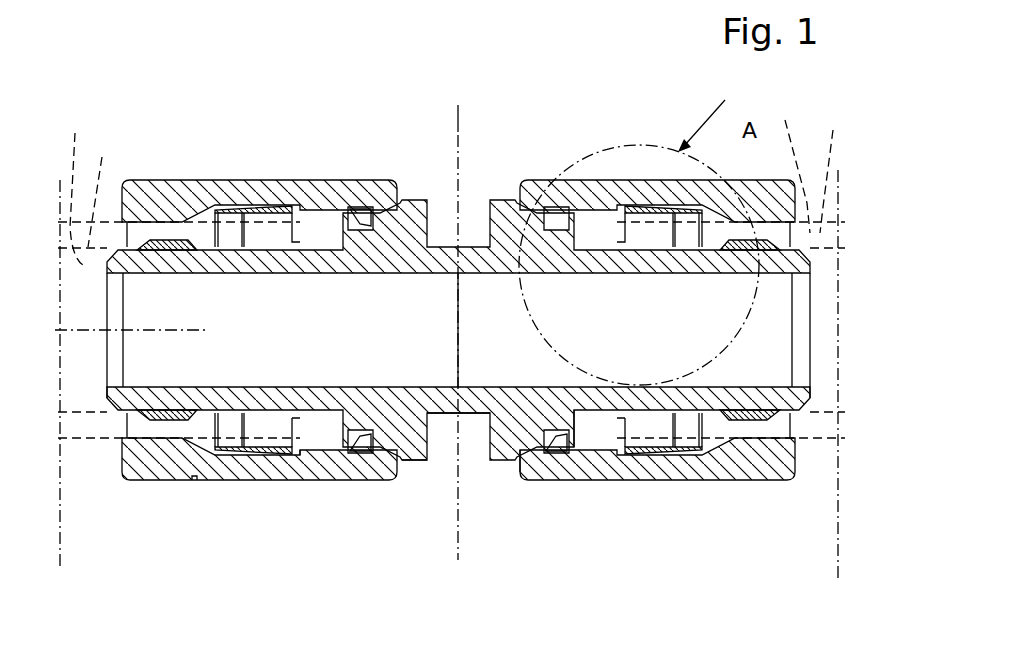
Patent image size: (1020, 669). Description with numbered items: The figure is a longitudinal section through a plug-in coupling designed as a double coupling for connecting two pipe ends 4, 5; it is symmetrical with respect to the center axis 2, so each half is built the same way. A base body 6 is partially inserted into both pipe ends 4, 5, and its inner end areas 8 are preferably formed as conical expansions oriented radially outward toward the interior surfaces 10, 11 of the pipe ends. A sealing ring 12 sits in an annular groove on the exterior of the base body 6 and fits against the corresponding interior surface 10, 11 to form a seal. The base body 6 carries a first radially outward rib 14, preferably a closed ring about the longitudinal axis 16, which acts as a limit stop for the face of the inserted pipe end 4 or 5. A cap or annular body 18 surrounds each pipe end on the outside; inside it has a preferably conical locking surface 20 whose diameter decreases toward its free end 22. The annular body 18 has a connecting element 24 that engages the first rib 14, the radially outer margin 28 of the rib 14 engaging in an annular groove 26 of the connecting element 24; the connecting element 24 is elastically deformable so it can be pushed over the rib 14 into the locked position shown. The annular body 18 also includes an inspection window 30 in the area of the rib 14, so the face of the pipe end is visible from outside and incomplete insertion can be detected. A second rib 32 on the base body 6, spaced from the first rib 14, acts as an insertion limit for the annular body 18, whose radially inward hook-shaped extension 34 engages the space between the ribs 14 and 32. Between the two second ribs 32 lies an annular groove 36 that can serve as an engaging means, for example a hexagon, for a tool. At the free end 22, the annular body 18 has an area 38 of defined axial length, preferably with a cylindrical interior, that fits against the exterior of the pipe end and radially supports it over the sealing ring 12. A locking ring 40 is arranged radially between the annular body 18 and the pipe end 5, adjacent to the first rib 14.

The center axis 2 is at (462, 119).
The pipe end 4 is at (179, 185).
The pipe end 5 is at (731, 340).
The base body 6 is at (321, 273).
The inner end area 8 is at (137, 250).
The interior surface 10 is at (179, 280).
The interior surface 11 is at (731, 168).
The sealing ring 12 is at (162, 250).
The first rib 14 is at (360, 223).
The longitudinal axis 16 is at (75, 412).
The annular body 18 is at (138, 473).
The locking surface 20 is at (192, 475).
The free end 22 is at (797, 460).
The connecting element 24 is at (560, 480).
The annular groove 26 is at (563, 453).
The radially outer margin 28 is at (577, 457).
The inspection window 30 is at (305, 420).
The second rib 32 is at (417, 453).
The hook-shaped extension 34 is at (390, 443).
The annular groove 36 is at (473, 423).
The area 38 is at (772, 455).
The locking ring 40 is at (680, 452).